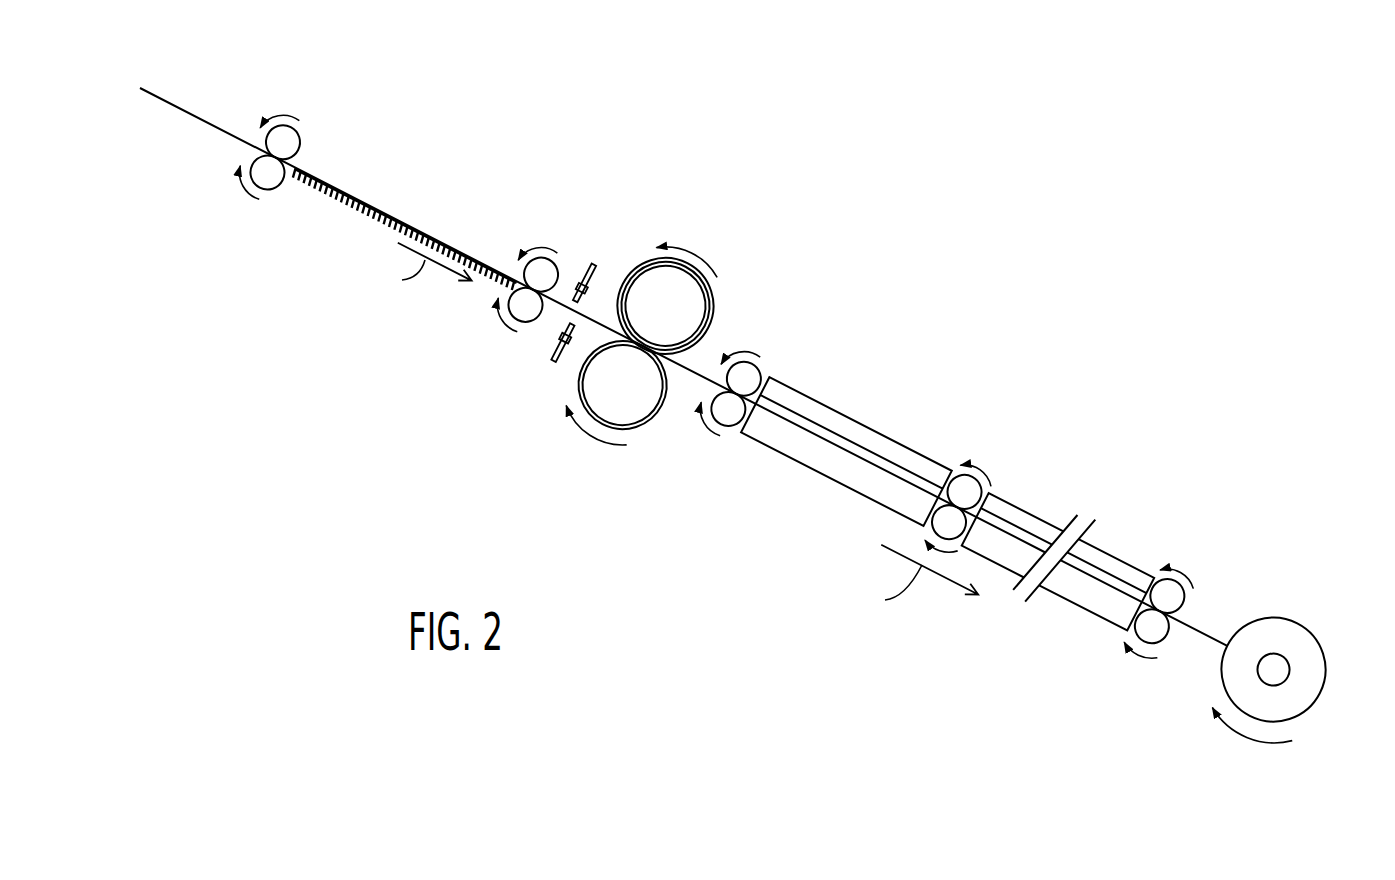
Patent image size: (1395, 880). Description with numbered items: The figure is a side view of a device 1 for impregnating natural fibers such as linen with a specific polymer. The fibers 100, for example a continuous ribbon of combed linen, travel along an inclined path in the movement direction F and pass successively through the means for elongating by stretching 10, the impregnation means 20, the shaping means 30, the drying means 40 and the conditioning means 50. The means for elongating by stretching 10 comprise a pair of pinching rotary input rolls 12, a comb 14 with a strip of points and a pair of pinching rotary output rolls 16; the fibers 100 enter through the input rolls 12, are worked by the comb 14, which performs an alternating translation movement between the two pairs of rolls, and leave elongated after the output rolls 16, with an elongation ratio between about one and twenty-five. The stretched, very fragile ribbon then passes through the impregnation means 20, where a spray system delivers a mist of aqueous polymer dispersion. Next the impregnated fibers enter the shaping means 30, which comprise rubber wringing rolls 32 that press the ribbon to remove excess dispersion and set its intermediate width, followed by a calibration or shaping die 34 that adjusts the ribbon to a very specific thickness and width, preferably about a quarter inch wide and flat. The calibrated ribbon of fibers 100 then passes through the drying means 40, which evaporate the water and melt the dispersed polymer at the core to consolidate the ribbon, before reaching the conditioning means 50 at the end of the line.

The device 1 is at (772, 249).
The means for elongating by stretching 10 is at (410, 215).
The pair of pinching rotary input rolls 12 is at (296, 134).
The comb 14 is at (397, 212).
The pair of pinching rotary output rolls 16 is at (552, 259).
The impregnation means 20 is at (606, 256).
The shaping means 30 is at (703, 447).
The wringing rolls 32 is at (697, 312).
The calibration or shaping die 34 is at (754, 372).
The drying means 40 is at (988, 453).
The conditioning means 50 is at (1284, 616).
The fibers 100 is at (199, 118).